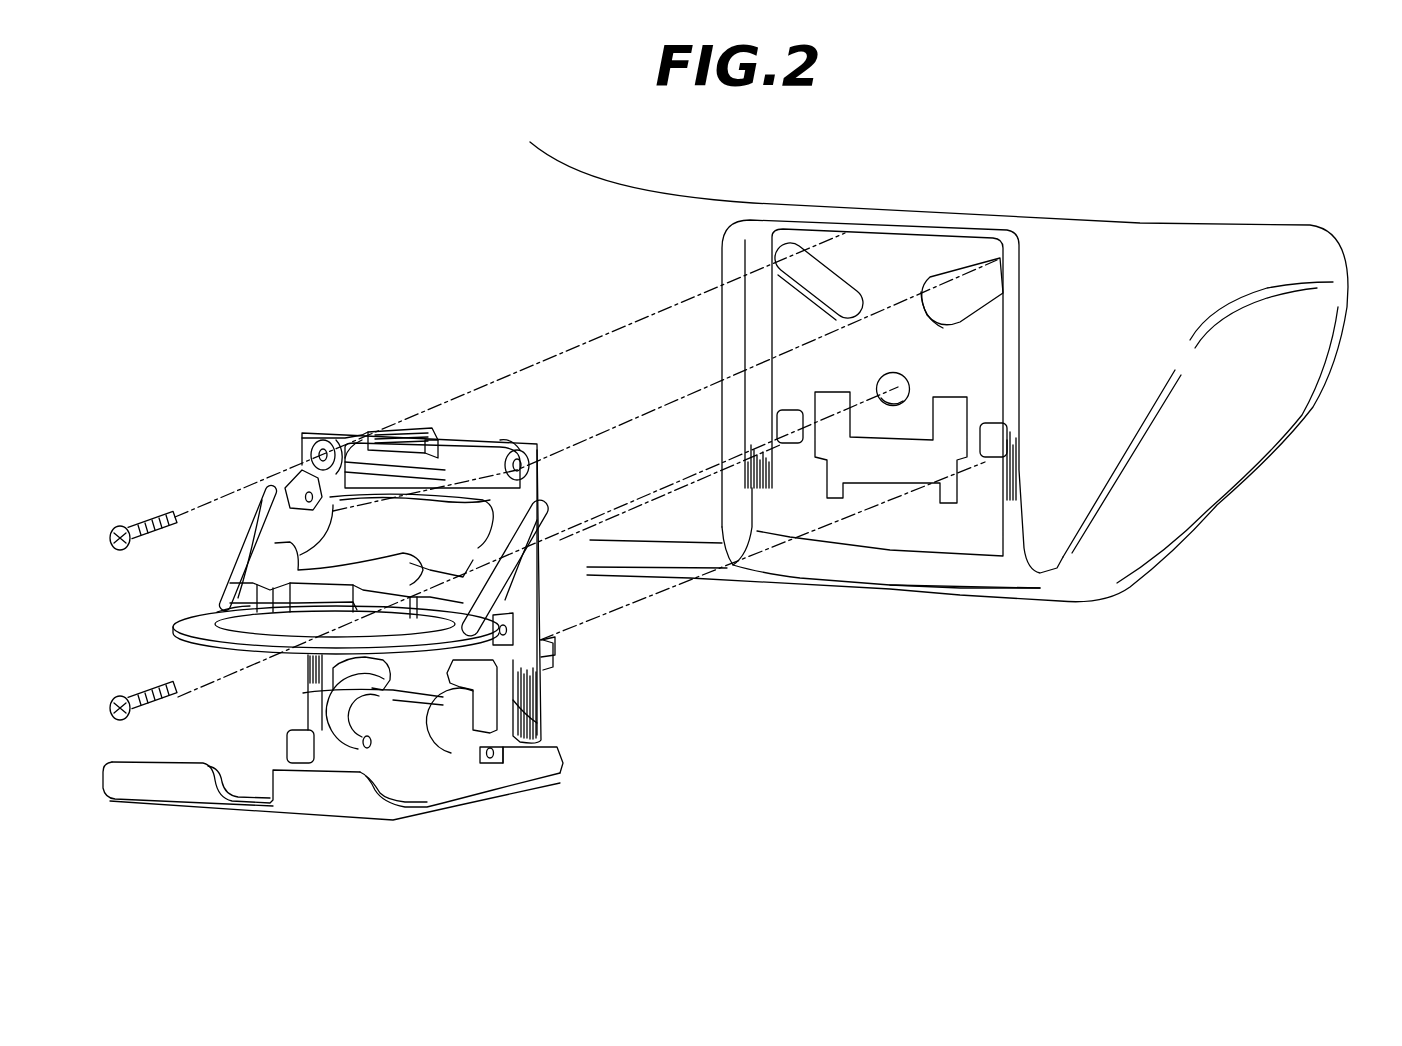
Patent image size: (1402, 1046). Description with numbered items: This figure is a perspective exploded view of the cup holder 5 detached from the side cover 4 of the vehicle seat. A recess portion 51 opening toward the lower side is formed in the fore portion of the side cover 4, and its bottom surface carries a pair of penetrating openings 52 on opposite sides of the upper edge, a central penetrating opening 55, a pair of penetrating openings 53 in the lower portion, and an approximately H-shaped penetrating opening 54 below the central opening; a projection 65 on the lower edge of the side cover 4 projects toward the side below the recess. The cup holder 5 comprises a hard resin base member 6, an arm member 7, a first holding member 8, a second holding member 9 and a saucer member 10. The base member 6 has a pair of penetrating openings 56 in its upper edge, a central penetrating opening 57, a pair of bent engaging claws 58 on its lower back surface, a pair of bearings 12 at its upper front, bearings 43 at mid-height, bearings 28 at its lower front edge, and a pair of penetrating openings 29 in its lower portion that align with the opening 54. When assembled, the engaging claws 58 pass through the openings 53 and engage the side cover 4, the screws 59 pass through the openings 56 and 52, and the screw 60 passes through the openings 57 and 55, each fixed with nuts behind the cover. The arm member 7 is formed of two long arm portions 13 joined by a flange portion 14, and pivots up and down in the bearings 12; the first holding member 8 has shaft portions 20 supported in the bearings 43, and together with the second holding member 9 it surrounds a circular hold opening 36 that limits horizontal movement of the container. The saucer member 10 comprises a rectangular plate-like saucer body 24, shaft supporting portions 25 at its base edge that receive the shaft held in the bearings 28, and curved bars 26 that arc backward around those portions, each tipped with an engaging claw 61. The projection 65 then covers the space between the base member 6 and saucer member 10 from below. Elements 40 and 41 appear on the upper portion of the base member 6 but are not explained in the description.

The side cover 4 is at (620, 168).
The cup holder 5 is at (380, 828).
The base member 6 is at (340, 430).
The arm member 7 is at (255, 510).
The first holding member 8 is at (255, 583).
The second holding member 9 is at (180, 645).
The saucer member 10 is at (220, 818).
The bearings 12 is at (330, 500).
The arm portions 13 is at (240, 557).
The flange portion 14 is at (532, 520).
The shaft portions 20 is at (513, 628).
The saucer body 24 is at (323, 822).
The shaft supporting portions 25 is at (347, 740).
The curved bars 26 is at (300, 718).
The bearings 28 is at (480, 767).
The penetrating openings 29 is at (333, 680).
The hold opening 36 is at (217, 612).
The connector terminal 40 is at (390, 431).
The connector 41 is at (420, 430).
The bearings 43 is at (553, 672).
The recess portion 51 is at (760, 222).
The penetrating openings 52 is at (838, 256).
The penetrating openings 53 is at (790, 443).
The penetrating opening 54 is at (887, 483).
The penetrating opening 55 is at (893, 372).
The penetrating openings 56 is at (310, 447).
The penetrating opening 57 is at (485, 517).
The engaging claws 58 is at (556, 645).
The screws 59 is at (122, 522).
The screw 60 is at (117, 695).
The engaging claw 61 is at (380, 697).
The projection 65 is at (940, 593).